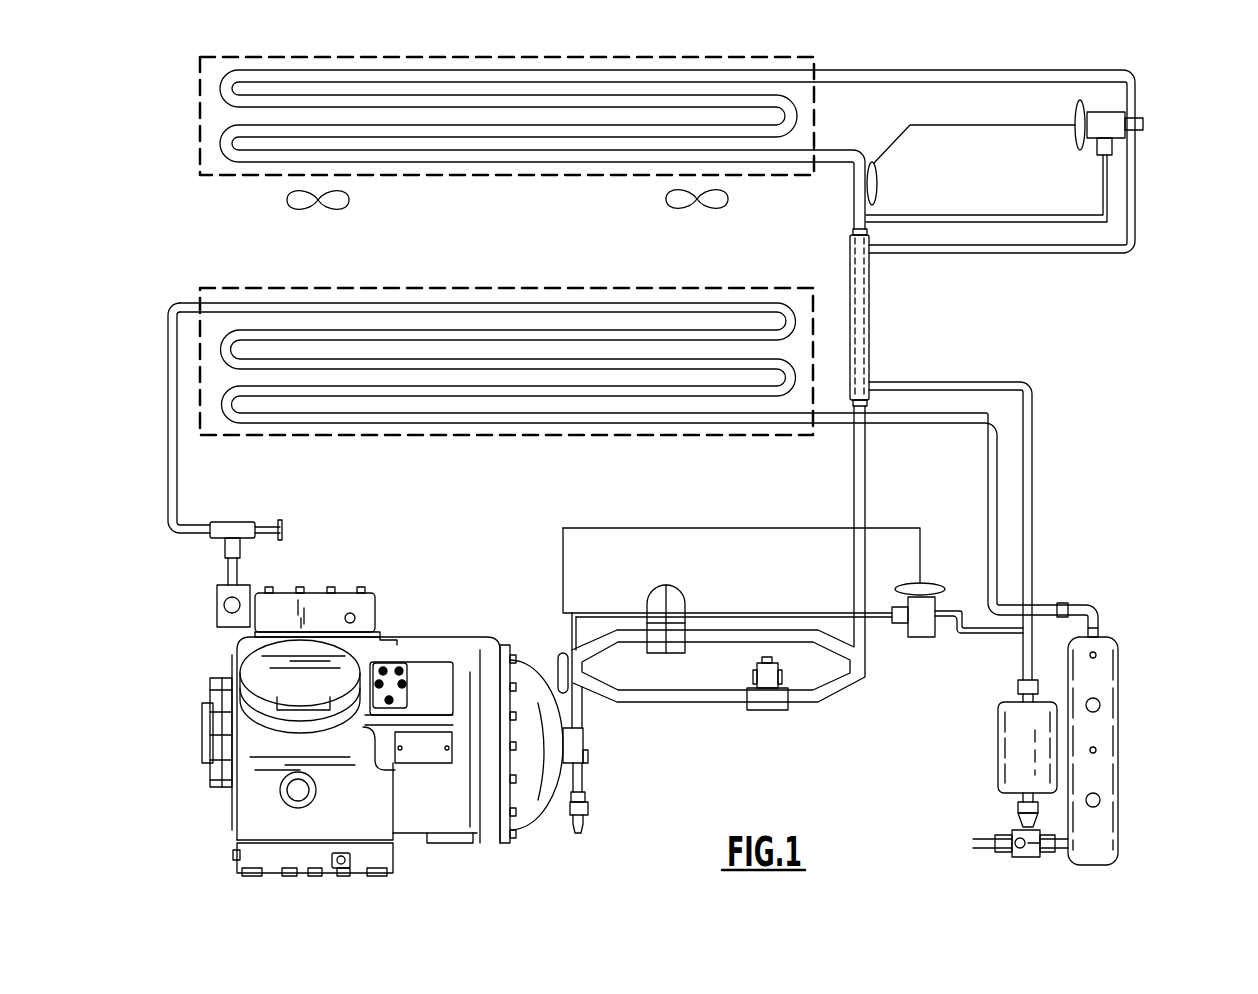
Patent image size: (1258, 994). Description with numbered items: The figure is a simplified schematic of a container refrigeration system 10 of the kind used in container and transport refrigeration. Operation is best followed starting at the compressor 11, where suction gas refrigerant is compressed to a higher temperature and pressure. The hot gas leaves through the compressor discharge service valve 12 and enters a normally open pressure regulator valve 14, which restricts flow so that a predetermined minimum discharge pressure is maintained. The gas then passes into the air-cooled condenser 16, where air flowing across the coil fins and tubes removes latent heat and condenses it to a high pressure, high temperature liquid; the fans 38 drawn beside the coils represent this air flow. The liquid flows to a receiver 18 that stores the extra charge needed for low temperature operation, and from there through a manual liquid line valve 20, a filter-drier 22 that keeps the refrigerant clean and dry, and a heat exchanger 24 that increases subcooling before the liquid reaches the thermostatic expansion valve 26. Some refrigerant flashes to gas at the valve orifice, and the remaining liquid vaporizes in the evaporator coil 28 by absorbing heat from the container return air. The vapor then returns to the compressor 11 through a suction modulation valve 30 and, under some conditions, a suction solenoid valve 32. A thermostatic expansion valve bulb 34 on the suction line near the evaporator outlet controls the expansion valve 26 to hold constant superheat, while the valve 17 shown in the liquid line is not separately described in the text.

The container refrigeration system 10 is at (1188, 168).
The compressor 11 is at (410, 641).
The compressor discharge service valve 12 is at (236, 592).
The pressure regulator valve 14 is at (228, 522).
The air-cooled condenser 16 is at (518, 437).
The expansion valve 17 is at (930, 582).
The receiver 18 is at (1118, 860).
The manual liquid line valve 20 is at (1010, 832).
The filter-drier 22 is at (1000, 703).
The heat exchanger 24 is at (869, 350).
The thermostatic expansion valve 26 is at (1073, 112).
The evaporator coil 28 is at (518, 176).
The suction modulation valve 30 is at (682, 590).
The suction solenoid valve 32 is at (768, 712).
The thermostatic expansion valve bulb 34 is at (878, 186).
The fan 38 is at (337, 208).